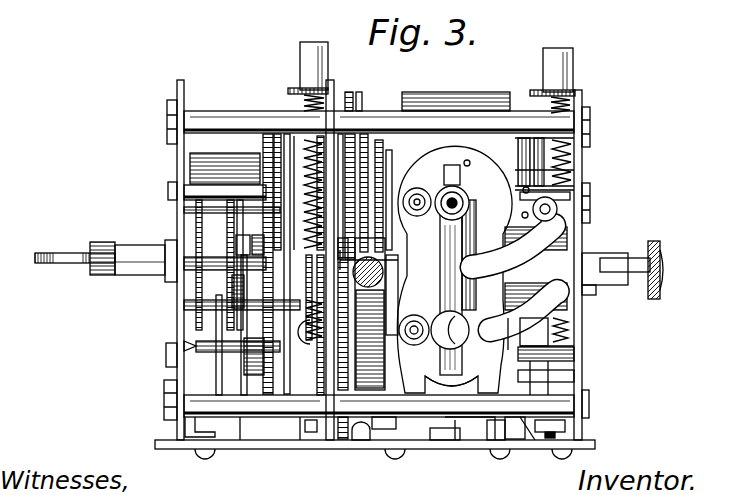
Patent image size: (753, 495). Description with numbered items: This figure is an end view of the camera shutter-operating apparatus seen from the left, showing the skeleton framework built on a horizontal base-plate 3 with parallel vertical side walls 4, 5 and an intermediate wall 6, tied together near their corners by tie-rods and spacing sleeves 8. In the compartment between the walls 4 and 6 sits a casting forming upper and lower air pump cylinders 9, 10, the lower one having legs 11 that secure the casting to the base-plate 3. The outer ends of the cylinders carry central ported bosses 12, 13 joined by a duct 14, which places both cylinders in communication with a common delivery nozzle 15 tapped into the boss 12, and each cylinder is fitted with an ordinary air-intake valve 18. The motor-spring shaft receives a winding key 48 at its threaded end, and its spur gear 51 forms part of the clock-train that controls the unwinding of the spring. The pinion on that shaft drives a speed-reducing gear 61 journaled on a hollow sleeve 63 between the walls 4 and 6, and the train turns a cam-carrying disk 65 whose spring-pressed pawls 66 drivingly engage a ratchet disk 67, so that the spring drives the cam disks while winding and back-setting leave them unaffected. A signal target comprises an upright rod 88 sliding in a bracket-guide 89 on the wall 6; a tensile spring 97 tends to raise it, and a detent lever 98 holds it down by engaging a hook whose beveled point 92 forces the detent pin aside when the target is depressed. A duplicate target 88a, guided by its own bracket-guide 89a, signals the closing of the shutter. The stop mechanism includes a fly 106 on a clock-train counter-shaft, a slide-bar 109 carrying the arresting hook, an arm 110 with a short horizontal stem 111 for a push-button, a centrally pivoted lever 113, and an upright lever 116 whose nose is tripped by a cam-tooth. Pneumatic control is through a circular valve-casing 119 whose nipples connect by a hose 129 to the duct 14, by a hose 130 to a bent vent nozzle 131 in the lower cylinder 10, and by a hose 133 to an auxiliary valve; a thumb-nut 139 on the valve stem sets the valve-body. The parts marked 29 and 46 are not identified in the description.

The base-plate 3 is at (370, 449).
The side wall 4 is at (580, 100).
The side wall 5 is at (180, 80).
The intermediate wall 6 is at (333, 82).
The spacing sleeves 8 is at (228, 116).
The upper air pump cylinder 9 is at (478, 160).
The lower air pump cylinder 10 is at (576, 354).
The legs 11 is at (576, 378).
The ported boss 12 is at (470, 192).
The ported boss 13 is at (560, 334).
The duct 14 is at (540, 198).
The delivery nozzle 15 is at (466, 226).
The air-intake valve 18 is at (417, 188).
The block 29 is at (464, 92).
The drum 46 is at (200, 174).
The winding key 48 is at (60, 244).
The spur gear 51 is at (262, 147).
The speed-reducing gear 61 is at (349, 92).
The hollow shaft or sleeve 63 is at (360, 170).
The cam-carrying disk 65 is at (378, 111).
The spring-pressed pawls 66 is at (386, 170).
The ratchet disk 67 is at (390, 195).
The upright rod or tube 88 is at (316, 44).
The target 88a is at (557, 47).
The bracket-guide 89 is at (292, 88).
The bracket-guide 89a is at (534, 88).
The beveled point 92 is at (302, 424).
The tensile spring 97 is at (302, 98).
The detent lever 98 is at (312, 372).
The fly 106 is at (444, 224).
The slide-bar 109 is at (350, 440).
The arm 110 is at (454, 374).
The horizontal stem 111 is at (368, 314).
The lever 113 is at (488, 440).
The upright lever 116 is at (566, 428).
The valve-casing 119 is at (527, 298).
The hose 129 is at (513, 247).
The hose 130 is at (556, 300).
The vent nozzle 131 is at (471, 324).
The hose 133 is at (557, 207).
The thumb-nut 139 is at (656, 240).